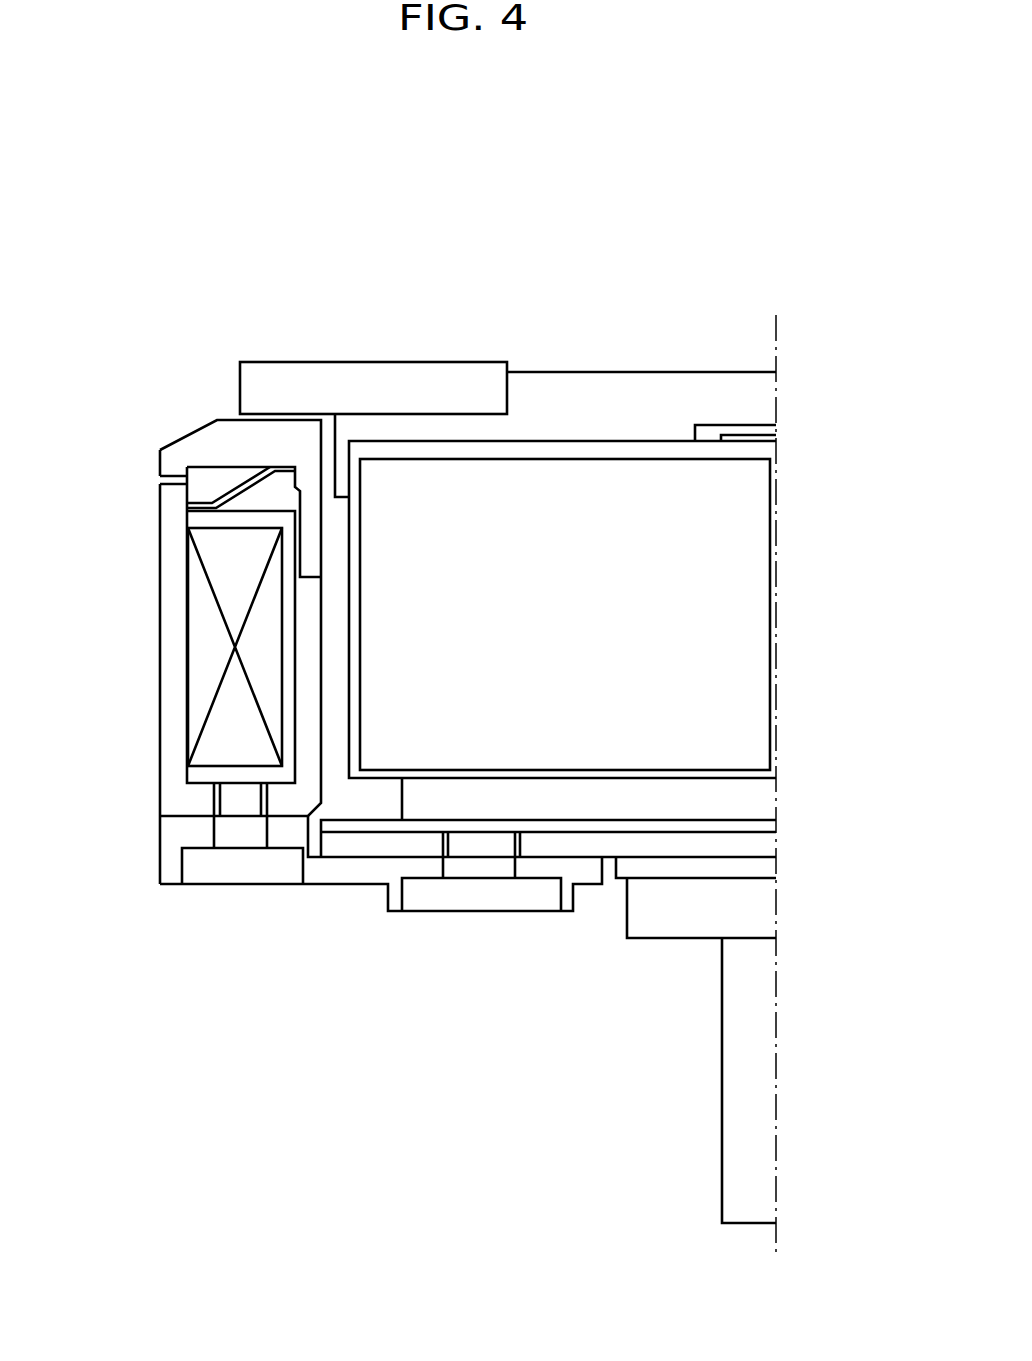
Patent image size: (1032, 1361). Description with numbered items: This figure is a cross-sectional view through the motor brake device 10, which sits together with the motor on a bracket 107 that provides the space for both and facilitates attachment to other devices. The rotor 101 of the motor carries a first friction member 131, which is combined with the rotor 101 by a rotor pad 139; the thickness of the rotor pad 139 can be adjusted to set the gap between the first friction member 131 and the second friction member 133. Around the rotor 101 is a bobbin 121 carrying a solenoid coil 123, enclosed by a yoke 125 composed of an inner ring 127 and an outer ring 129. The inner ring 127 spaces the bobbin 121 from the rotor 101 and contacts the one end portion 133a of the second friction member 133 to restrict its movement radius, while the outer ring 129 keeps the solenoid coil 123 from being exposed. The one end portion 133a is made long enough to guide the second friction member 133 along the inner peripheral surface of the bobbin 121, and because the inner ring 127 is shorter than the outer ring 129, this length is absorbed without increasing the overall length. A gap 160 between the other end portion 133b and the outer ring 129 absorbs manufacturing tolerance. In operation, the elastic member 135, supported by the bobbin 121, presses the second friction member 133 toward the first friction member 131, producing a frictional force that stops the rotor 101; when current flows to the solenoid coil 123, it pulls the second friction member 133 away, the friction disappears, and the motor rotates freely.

The motor brake device 10 is at (183, 279).
The rotor 101 is at (753, 450).
The bracket 107 is at (753, 848).
The bobbin 121 is at (207, 776).
The solenoid coil 123 is at (207, 641).
The yoke 125 is at (295, 982).
The inner ring 127 is at (292, 800).
The outer ring 129 is at (187, 800).
The first friction member 131 is at (375, 372).
The second friction member 133 is at (198, 435).
The one end portion of the second friction member 133a is at (310, 528).
The other end portion of the second friction member 133b is at (173, 467).
The elastic member 135 is at (222, 496).
The rotor pad 139 is at (667, 395).
The gap 160 is at (173, 482).